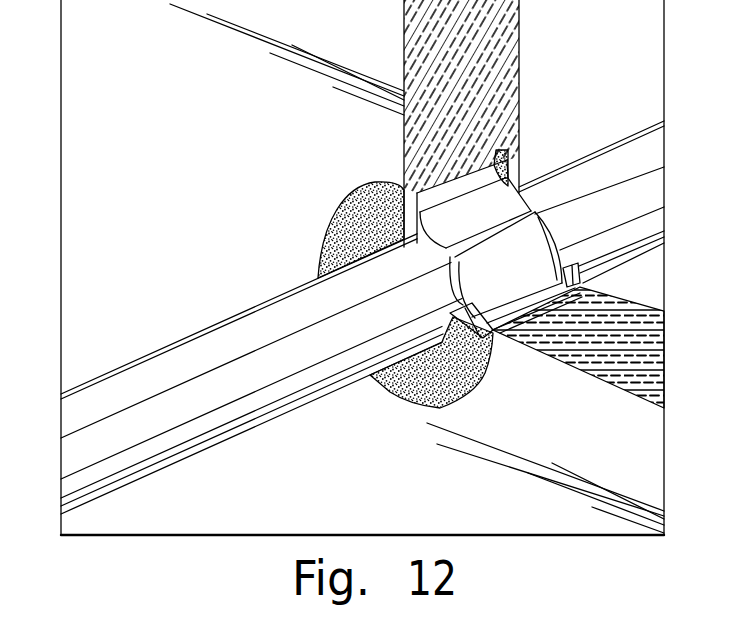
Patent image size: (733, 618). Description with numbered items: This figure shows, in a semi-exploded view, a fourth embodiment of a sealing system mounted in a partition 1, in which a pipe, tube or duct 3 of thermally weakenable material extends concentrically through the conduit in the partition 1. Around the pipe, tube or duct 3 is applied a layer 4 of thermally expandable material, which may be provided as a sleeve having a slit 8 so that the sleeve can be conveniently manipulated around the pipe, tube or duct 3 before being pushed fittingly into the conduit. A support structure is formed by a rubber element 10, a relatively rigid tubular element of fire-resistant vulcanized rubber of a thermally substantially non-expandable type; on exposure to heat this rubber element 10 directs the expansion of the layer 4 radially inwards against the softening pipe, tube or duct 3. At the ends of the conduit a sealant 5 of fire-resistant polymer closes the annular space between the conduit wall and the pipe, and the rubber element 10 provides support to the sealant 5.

The partition 1 is at (96, 124).
The pipe, tube or duct 3 is at (230, 313).
The layer of thermally expandable material 4 is at (552, 238).
The sealant 5 is at (392, 400).
The slit 8 is at (373, 187).
The rubber element 10 is at (500, 153).